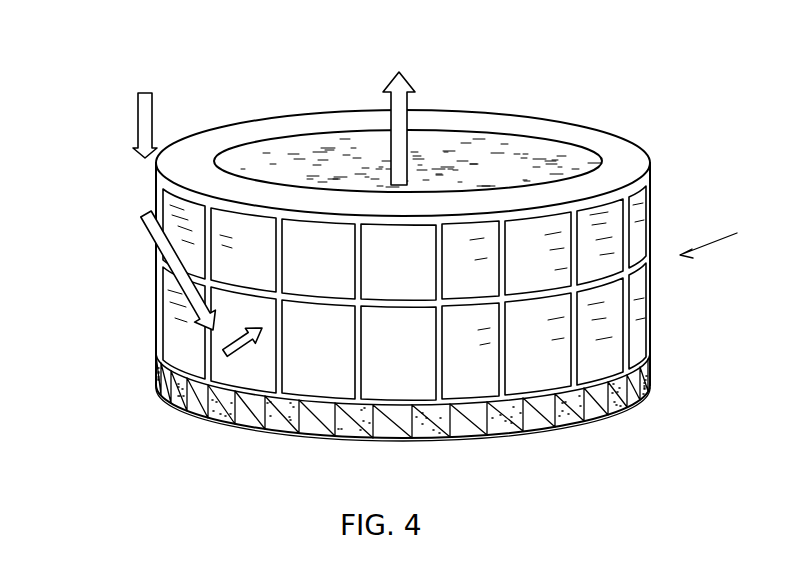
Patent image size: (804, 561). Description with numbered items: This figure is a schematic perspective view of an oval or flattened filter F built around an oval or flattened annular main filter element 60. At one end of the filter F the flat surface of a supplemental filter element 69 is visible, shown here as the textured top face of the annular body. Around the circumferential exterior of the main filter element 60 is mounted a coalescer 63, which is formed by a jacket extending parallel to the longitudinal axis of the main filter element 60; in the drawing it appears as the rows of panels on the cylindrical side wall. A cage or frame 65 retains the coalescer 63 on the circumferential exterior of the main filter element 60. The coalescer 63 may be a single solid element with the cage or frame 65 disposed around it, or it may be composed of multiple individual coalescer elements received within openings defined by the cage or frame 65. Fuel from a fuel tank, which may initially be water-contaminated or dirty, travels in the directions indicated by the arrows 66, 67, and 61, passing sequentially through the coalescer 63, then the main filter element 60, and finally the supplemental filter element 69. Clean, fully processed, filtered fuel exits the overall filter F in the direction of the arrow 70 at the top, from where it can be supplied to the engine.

The annular main filter element 60 is at (620, 388).
The arrow 61 is at (222, 352).
The coalescer 63 is at (603, 238).
The cage or frame 65 is at (273, 365).
The arrow 66 is at (138, 112).
The arrow 67 is at (146, 228).
The supplemental filter element 69 is at (507, 155).
The arrow 70 is at (405, 74).
The filter F is at (720, 240).